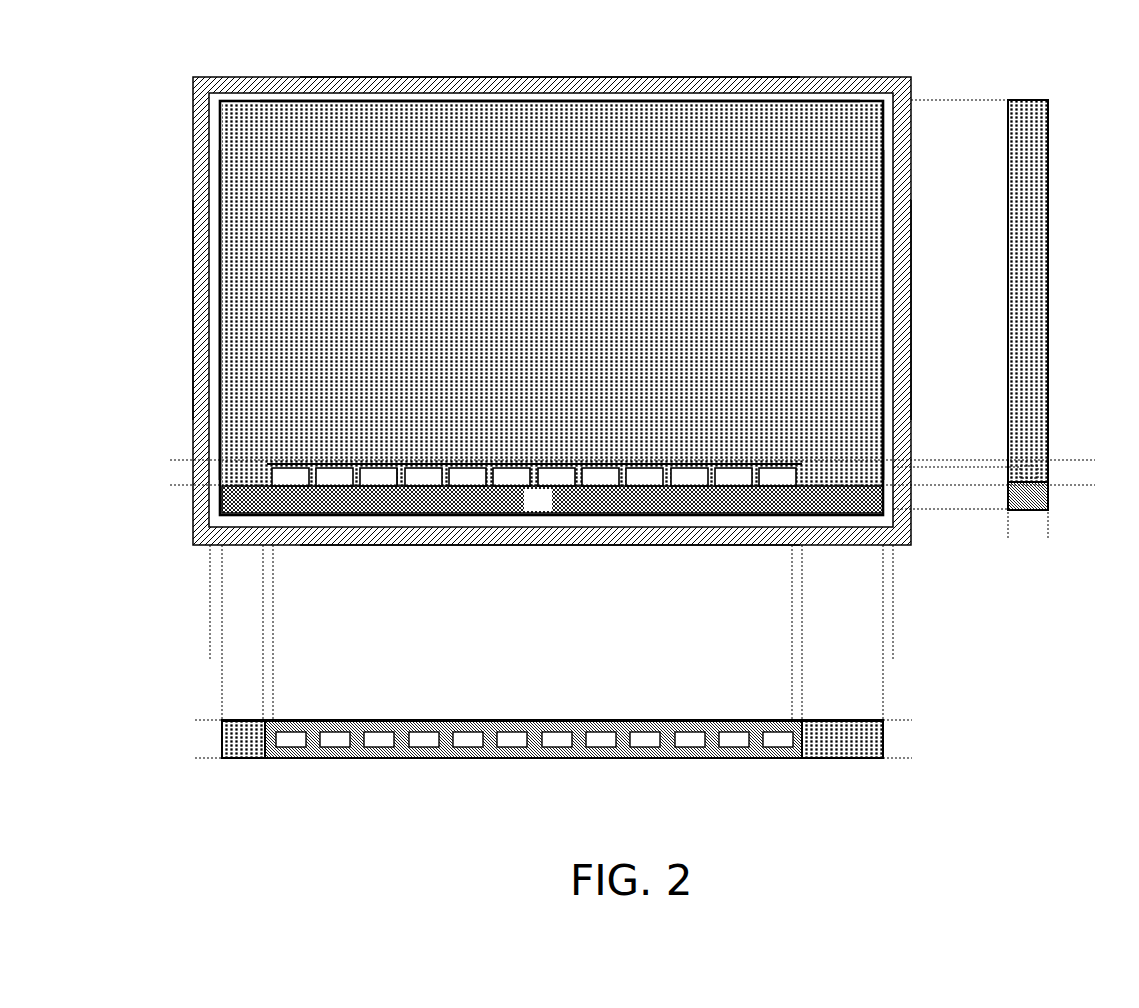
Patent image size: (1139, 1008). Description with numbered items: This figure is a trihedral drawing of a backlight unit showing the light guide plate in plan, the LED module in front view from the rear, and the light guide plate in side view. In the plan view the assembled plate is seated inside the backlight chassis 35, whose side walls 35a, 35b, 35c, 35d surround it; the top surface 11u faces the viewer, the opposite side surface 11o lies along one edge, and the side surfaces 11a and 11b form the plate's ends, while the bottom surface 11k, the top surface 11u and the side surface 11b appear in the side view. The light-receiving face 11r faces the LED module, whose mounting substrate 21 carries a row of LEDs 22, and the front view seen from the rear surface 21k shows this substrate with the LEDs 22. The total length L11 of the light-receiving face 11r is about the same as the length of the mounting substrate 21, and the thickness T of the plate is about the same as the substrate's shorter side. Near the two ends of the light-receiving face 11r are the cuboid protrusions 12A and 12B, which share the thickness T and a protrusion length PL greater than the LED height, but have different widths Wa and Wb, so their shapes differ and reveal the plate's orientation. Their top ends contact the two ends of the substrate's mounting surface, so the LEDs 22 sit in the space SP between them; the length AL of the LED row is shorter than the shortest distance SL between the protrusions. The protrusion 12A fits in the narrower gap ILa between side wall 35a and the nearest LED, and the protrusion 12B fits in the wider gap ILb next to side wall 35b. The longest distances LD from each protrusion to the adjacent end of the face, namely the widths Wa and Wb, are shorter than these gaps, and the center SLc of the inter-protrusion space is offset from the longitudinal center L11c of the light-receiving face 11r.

The backlight chassis 35 is at (186, 70).
The side wall 35a is at (194, 283).
The side wall 35b is at (897, 283).
The side wall 35c is at (209, 546).
The frame top side portion 35d is at (495, 77).
The top surface 11u is at (562, 304).
The side surface 11o is at (506, 102).
The side surface 11a is at (224, 283).
The side surface 11b is at (880, 283).
The bottom surface 11k is at (1052, 258).
The light-receiving face 11r is at (511, 465).
The protrusion 12A is at (262, 478).
The protrusion 12B is at (800, 476).
The mounting substrate 21 is at (552, 511).
The rear surface 21k is at (620, 758).
The LEDs 22 is at (1050, 484).
The space SP is at (400, 476).
The protrusion length PL is at (180, 440).
The width Wa is at (263, 428).
The width Wb is at (883, 428).
The total length L11 is at (222, 567).
The longitudinal center of the light-receiving face L11c is at (553, 571).
The shortest distance SL is at (273, 611).
The center of the inter-protrusion space SLc is at (535, 615).
The length of a row of LEDs AL is at (273, 650).
The longest distance LD is at (263, 611).
The gap ILa is at (210, 650).
The gap ILb is at (802, 650).
The thickness T is at (202, 720).